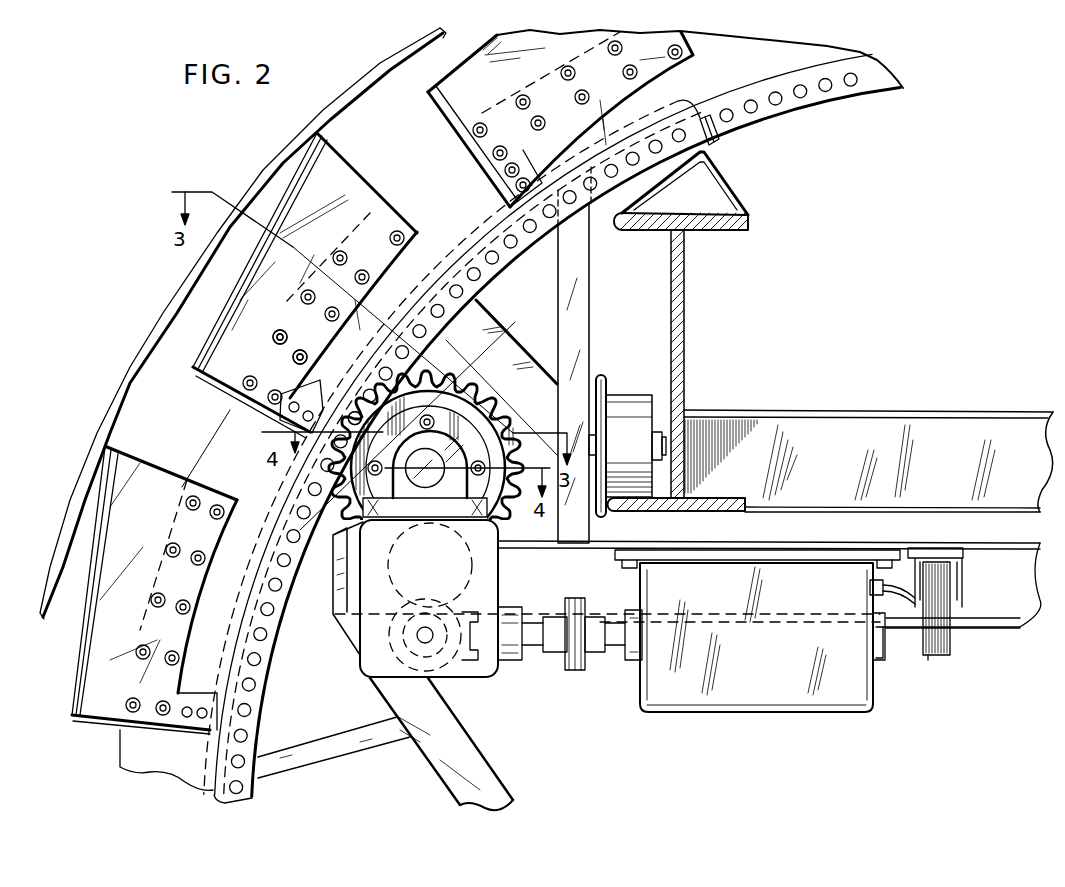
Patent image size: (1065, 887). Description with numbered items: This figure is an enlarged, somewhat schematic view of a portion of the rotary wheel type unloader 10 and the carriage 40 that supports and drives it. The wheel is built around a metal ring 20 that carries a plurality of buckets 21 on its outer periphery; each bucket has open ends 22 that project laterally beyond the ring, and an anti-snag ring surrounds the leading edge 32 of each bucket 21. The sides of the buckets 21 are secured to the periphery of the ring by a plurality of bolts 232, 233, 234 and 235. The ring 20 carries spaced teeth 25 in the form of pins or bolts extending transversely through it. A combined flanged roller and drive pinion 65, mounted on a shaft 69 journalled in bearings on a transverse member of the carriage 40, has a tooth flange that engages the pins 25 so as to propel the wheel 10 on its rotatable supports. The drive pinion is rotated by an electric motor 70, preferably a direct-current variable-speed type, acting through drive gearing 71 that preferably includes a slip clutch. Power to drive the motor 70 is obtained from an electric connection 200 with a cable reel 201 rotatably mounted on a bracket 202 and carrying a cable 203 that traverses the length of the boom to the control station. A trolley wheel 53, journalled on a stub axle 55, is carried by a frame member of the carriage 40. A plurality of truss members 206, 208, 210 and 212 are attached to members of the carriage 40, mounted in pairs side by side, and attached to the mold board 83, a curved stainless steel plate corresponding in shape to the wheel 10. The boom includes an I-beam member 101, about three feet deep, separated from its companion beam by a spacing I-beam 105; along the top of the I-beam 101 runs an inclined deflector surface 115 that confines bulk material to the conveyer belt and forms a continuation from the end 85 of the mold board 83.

The rotary wheel type unloader 10 is at (127, 328).
The metal ring 20 is at (772, 72).
The bucket 21 is at (110, 477).
The open end of bucket 22 is at (360, 163).
The teeth (pins) 25 is at (730, 120).
The leading edge of bucket 32 is at (314, 130).
The carriage 40 is at (420, 761).
The trolley wheel 53 is at (622, 395).
The stub axle 55 is at (666, 447).
The flanged roller and drive pinion 65 is at (506, 331).
The shaft 69 is at (497, 543).
The electric motor 70 is at (747, 700).
The drive gearing 71 is at (557, 652).
The mold board 83 is at (460, 243).
The end of mold board 85 is at (714, 142).
The I-beam member 101 is at (686, 290).
The spacing I-beam 105 is at (868, 420).
The deflector surface 115 is at (745, 210).
The electric connection 200 is at (898, 588).
The cable reel 201 is at (952, 652).
The bracket 202 is at (963, 563).
The cable 203 is at (930, 657).
The truss member 206 is at (593, 273).
The truss member 208 is at (487, 307).
The truss member 210 is at (318, 560).
The truss member 212 is at (303, 740).
The bolt 232 is at (278, 340).
The bolt 233 is at (300, 352).
The bolt 234 is at (298, 405).
The bolt 235 is at (285, 428).